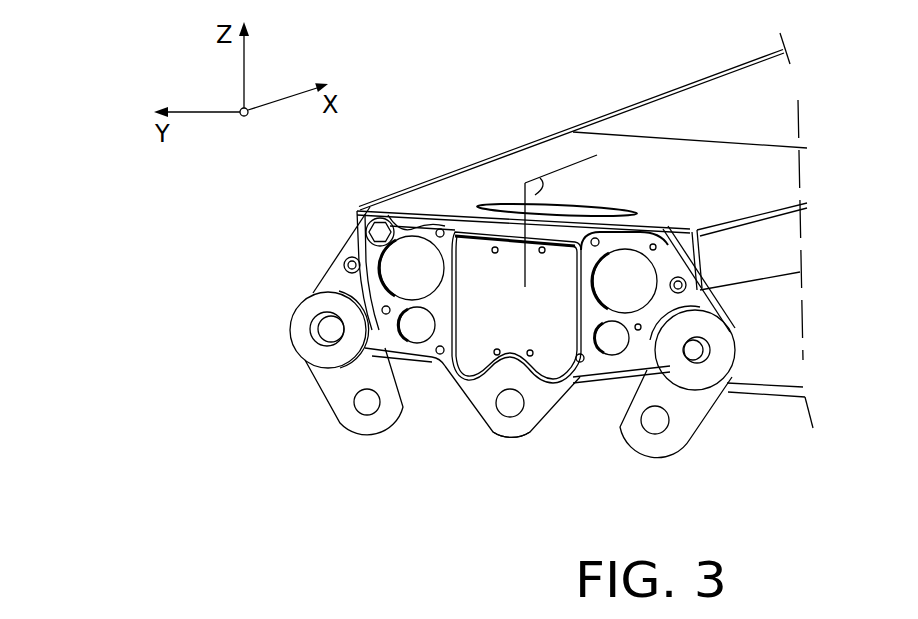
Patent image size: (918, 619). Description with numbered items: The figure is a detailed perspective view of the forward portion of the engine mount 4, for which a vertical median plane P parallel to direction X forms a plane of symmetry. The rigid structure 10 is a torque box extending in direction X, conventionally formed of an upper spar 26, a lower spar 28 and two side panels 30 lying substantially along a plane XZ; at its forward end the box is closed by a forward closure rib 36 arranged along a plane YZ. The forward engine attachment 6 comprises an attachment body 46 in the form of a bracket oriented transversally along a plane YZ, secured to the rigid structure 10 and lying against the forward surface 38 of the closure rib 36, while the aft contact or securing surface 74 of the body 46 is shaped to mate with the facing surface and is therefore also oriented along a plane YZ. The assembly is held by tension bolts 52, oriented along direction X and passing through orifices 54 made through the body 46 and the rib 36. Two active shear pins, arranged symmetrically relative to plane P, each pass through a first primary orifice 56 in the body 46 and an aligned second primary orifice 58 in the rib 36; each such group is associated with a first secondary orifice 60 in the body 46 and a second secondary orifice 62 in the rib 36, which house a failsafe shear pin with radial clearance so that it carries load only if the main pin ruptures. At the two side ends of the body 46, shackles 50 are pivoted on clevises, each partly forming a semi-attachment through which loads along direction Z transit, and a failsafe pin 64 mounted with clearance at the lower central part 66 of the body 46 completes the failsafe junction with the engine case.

The engine mount 4 is at (524, 100).
The forward engine attachment 6 is at (236, 320).
The rigid structure 10 is at (674, 84).
The upper spar 26 is at (737, 83).
The lower spar 28 is at (418, 362).
The side panel 30 is at (602, 119).
The forward closure rib 36 is at (493, 210).
The forward surface 38 is at (472, 220).
The attachment body 46 is at (443, 392).
The shackle 50 is at (340, 423).
The tension bolt 52 is at (358, 210).
The orifice 54 is at (440, 236).
The first primary orifice 56 is at (390, 245).
The second primary orifice 58 is at (387, 207).
The first secondary orifice 60 is at (362, 350).
The second secondary orifice 62 is at (397, 336).
The failsafe pin 64 is at (505, 415).
The lower central part 66 is at (523, 428).
The aft contact surface 74 is at (365, 233).
The vertical median plane P is at (526, 193).